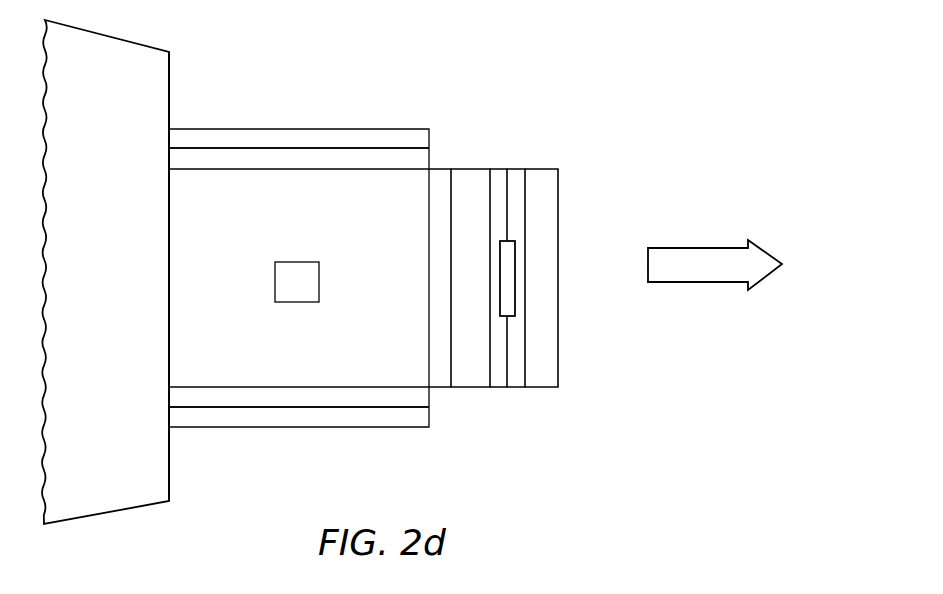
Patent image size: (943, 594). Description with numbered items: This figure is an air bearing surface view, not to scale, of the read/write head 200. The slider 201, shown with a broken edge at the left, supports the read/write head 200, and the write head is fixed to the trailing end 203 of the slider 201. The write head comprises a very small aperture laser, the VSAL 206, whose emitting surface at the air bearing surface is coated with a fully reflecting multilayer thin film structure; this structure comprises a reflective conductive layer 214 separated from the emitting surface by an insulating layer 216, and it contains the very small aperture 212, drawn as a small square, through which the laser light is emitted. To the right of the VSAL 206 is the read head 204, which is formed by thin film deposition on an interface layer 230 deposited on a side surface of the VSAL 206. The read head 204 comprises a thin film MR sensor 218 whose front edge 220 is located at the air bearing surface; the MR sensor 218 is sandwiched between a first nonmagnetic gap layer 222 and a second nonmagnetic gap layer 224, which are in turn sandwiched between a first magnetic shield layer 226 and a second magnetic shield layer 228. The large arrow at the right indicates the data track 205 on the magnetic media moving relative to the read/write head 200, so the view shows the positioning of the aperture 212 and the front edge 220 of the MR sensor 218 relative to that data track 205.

The read/write head 200 is at (598, 465).
The slider 201 is at (120, 251).
The trailing end 203 is at (169, 76).
The read head 204 is at (303, 128).
The data track 205 is at (700, 283).
The very small aperture laser (VSAL) 206 is at (257, 224).
The aperture 212 is at (320, 287).
The reflective conductive layer 214 is at (259, 420).
The insulating layer 216 is at (326, 160).
The MR sensor 218 is at (516, 253).
The front edge 220 is at (510, 291).
The first nonmagnetic gap layer 222 is at (498, 169).
The second nonmagnetic gap layer 224 is at (515, 169).
The first magnetic shield layer 226 is at (468, 391).
The second magnetic shield layer 228 is at (545, 391).
The interface layer 230 is at (440, 169).